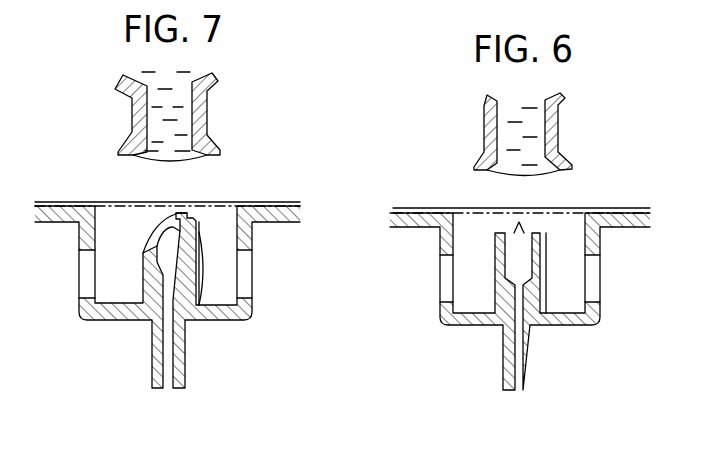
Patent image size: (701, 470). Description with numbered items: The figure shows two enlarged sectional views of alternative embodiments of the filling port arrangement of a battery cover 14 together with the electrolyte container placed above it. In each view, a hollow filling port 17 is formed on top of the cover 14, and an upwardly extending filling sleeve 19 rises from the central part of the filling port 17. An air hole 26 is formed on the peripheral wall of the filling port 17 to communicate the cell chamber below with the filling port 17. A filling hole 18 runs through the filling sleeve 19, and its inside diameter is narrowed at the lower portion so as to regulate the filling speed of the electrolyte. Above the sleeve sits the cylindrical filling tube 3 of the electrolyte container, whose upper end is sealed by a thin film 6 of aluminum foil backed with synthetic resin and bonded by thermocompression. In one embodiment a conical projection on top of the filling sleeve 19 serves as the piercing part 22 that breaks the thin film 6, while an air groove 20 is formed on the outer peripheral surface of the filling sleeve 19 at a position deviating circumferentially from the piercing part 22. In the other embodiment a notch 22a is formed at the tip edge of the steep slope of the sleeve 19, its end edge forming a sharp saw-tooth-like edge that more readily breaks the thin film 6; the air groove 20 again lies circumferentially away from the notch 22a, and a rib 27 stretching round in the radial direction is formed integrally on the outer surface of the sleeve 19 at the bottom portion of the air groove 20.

In FIG. 7, the filling tube 3 is at (197, 107).
In FIG. 6, the filling tube 3 is at (550, 133).
In FIG. 7, the thin film 6 is at (187, 160).
In FIG. 6, the thin film 6 is at (523, 175).
In FIG. 6, the cover 14 is at (408, 220).
In FIG. 7, the filling port 17 is at (219, 222).
In FIG. 6, the filling port 17 is at (566, 243).
In FIG. 7, the filling hole 18 is at (166, 321).
In FIG. 6, the filling hole 18 is at (518, 323).
In FIG. 7, the filling sleeve 19 is at (193, 317).
In FIG. 6, the filling sleeve 19 is at (505, 290).
In FIG. 7, the air groove 20 is at (200, 253).
In FIG. 6, the air groove 20 is at (547, 273).
In FIG. 7, the piercing part 22 is at (173, 215).
In FIG. 6, the piercing part 22 is at (517, 221).
In FIG. 7, the notch 22a is at (181, 211).
In FIG. 7, the air hole 26 is at (85, 277).
In FIG. 6, the air hole 26 is at (445, 287).
In FIG. 7, the rib 27 is at (203, 290).